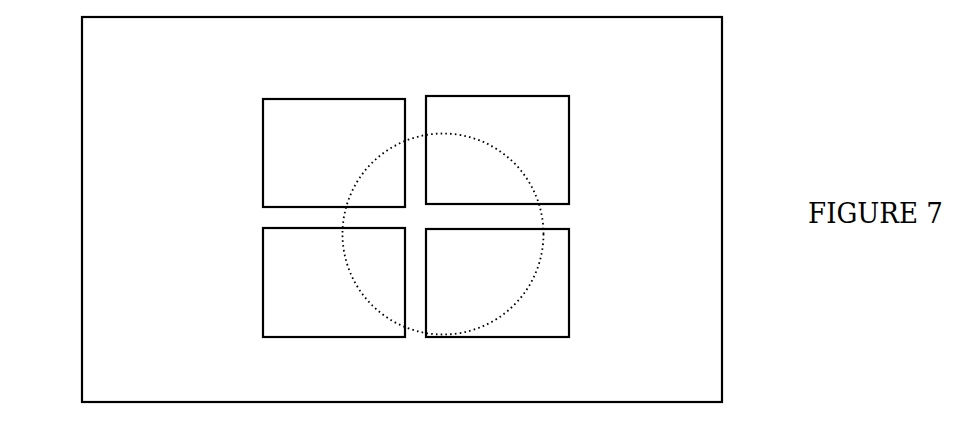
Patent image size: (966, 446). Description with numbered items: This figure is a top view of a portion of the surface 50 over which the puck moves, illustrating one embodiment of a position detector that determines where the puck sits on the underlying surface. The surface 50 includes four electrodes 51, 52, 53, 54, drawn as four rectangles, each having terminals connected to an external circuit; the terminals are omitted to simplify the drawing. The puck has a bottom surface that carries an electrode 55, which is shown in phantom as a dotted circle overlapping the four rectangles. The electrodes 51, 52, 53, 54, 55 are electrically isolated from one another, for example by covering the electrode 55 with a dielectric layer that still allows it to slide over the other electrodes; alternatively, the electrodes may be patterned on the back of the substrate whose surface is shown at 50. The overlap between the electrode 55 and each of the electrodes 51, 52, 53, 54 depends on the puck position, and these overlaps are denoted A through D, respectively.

The surface 50 is at (715, 91).
The electrode 51 is at (271, 132).
The electrode 52 is at (558, 111).
The electrode 53 is at (272, 307).
The electrode 54 is at (559, 310).
The electrode 55 is at (533, 221).